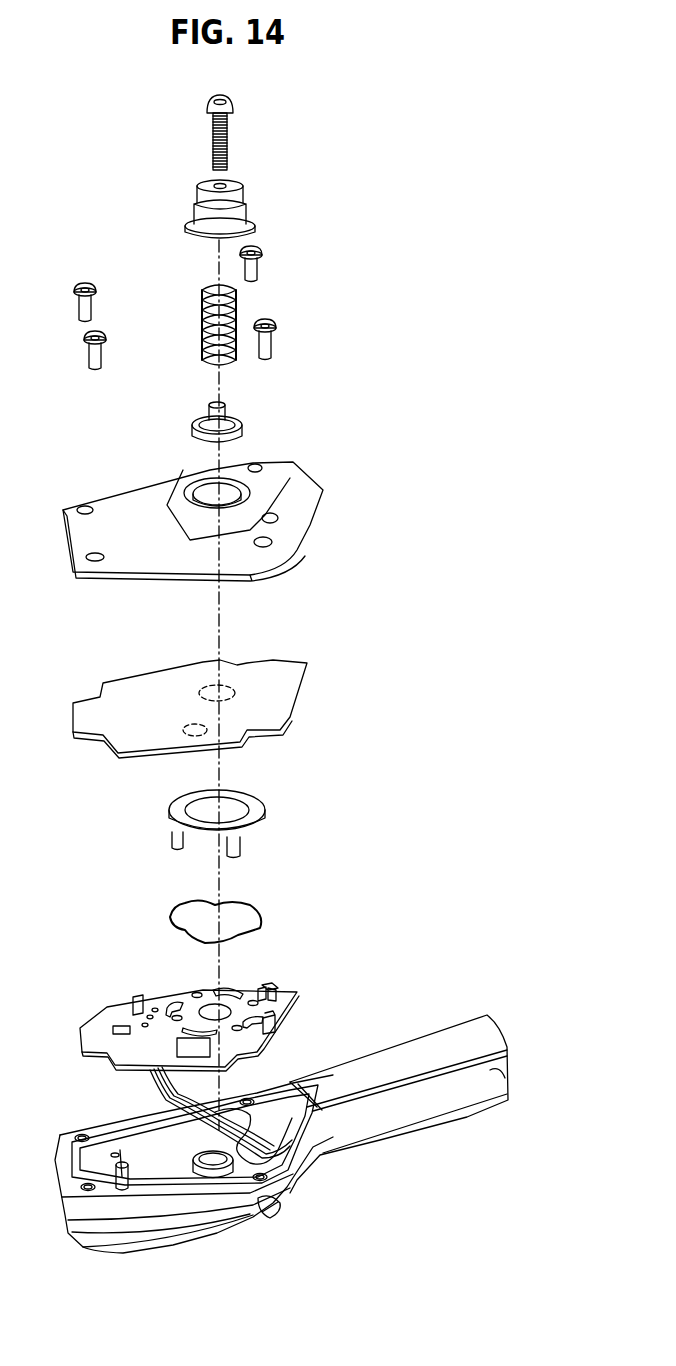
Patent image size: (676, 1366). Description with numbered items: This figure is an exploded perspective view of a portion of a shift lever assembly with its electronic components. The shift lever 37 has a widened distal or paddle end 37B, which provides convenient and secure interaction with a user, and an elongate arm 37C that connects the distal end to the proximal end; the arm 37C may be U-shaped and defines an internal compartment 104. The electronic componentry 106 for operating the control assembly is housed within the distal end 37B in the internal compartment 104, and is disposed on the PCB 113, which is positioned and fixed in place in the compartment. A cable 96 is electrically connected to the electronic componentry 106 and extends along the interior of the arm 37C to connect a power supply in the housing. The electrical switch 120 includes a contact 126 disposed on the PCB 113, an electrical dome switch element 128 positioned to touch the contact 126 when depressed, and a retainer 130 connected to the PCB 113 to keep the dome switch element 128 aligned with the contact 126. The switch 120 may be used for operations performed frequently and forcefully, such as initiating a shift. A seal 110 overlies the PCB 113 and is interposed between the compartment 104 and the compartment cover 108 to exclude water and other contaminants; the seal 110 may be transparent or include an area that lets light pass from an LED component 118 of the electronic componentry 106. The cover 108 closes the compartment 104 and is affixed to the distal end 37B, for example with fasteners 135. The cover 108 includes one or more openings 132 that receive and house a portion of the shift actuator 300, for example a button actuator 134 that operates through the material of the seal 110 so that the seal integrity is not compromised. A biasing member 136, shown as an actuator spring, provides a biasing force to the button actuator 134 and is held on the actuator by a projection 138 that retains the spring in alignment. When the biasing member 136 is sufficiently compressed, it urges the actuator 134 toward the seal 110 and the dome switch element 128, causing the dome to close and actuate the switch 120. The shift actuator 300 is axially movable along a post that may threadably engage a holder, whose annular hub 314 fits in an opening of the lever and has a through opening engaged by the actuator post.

The shift actuator 300 is at (212, 152).
The annular hub 314 is at (232, 188).
The fasteners 135 is at (256, 249).
The biasing member 136 is at (238, 312).
The projection 138 is at (209, 404).
The button actuator 134 is at (240, 420).
The compartment cover 108 is at (322, 493).
The openings 132 is at (258, 466).
The seal 110 is at (307, 683).
The electronic componentry 106 is at (270, 815).
The retainer 130 is at (258, 828).
The electrical dome switch element 128 is at (255, 922).
The electrical switch 120 is at (216, 1006).
The contact 126 is at (214, 1005).
The PCB 113 is at (276, 991).
The LED component 118 is at (277, 1025).
The cable 96 is at (260, 1090).
The internal compartment 104 is at (133, 1142).
The shift lever 37 is at (411, 1102).
The distal end 37B is at (290, 1208).
The elongate arm 37C is at (500, 1078).